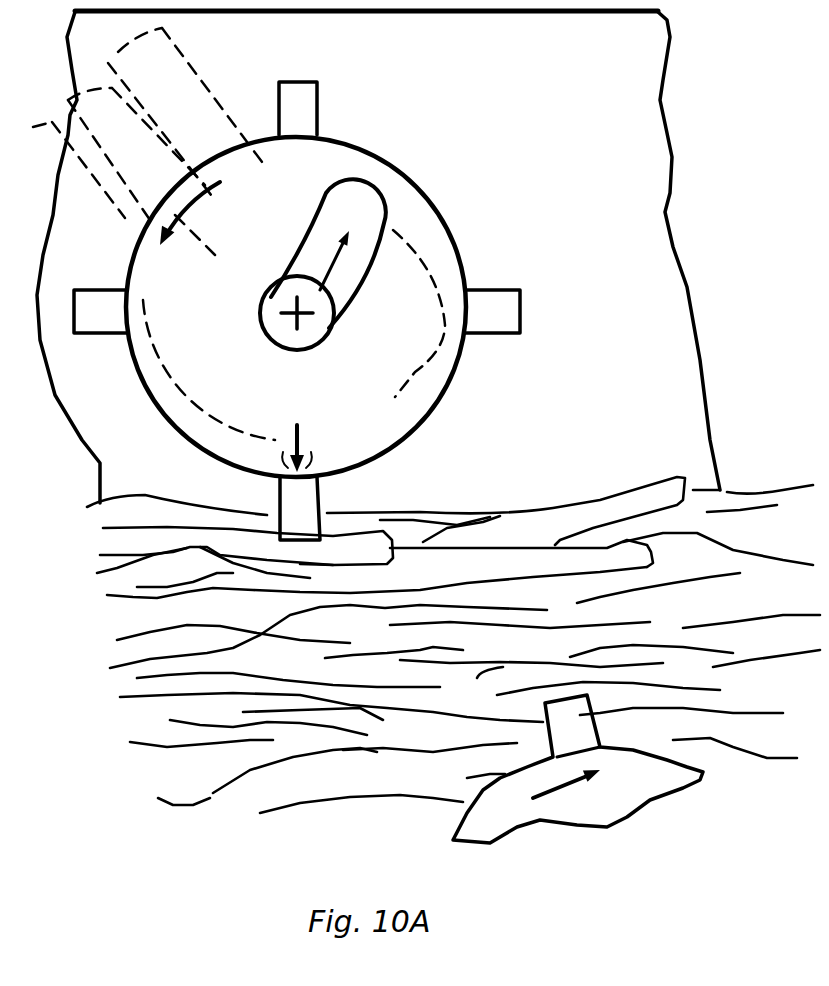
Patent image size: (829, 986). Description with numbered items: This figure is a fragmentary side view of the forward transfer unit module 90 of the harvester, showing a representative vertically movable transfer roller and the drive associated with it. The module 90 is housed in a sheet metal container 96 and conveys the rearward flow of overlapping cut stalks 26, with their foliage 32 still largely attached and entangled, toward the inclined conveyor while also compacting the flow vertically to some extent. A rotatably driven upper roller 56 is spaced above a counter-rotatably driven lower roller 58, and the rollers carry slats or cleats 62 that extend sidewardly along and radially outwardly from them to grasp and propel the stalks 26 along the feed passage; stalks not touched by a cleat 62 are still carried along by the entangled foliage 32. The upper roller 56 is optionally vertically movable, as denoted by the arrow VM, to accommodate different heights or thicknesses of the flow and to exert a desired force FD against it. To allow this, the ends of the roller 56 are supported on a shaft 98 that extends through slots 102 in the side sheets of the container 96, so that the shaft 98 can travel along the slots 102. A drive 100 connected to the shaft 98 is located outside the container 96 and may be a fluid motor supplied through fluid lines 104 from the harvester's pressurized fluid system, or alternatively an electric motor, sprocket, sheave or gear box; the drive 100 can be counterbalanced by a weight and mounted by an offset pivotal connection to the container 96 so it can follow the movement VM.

The stalks 26 is at (453, 677).
The foliage 32 is at (217, 717).
The upper roller 56 is at (430, 200).
The lower roller 58 is at (697, 787).
The cleats 62 is at (320, 103).
The forward transfer unit module 90 is at (414, 257).
The container 96 is at (620, 138).
The shaft 98 is at (330, 332).
The drive 100 is at (397, 393).
The slots 102 is at (380, 258).
The fluid lines 104 is at (181, 73).
The vertical movement VM is at (323, 287).
The desired force FD is at (333, 433).